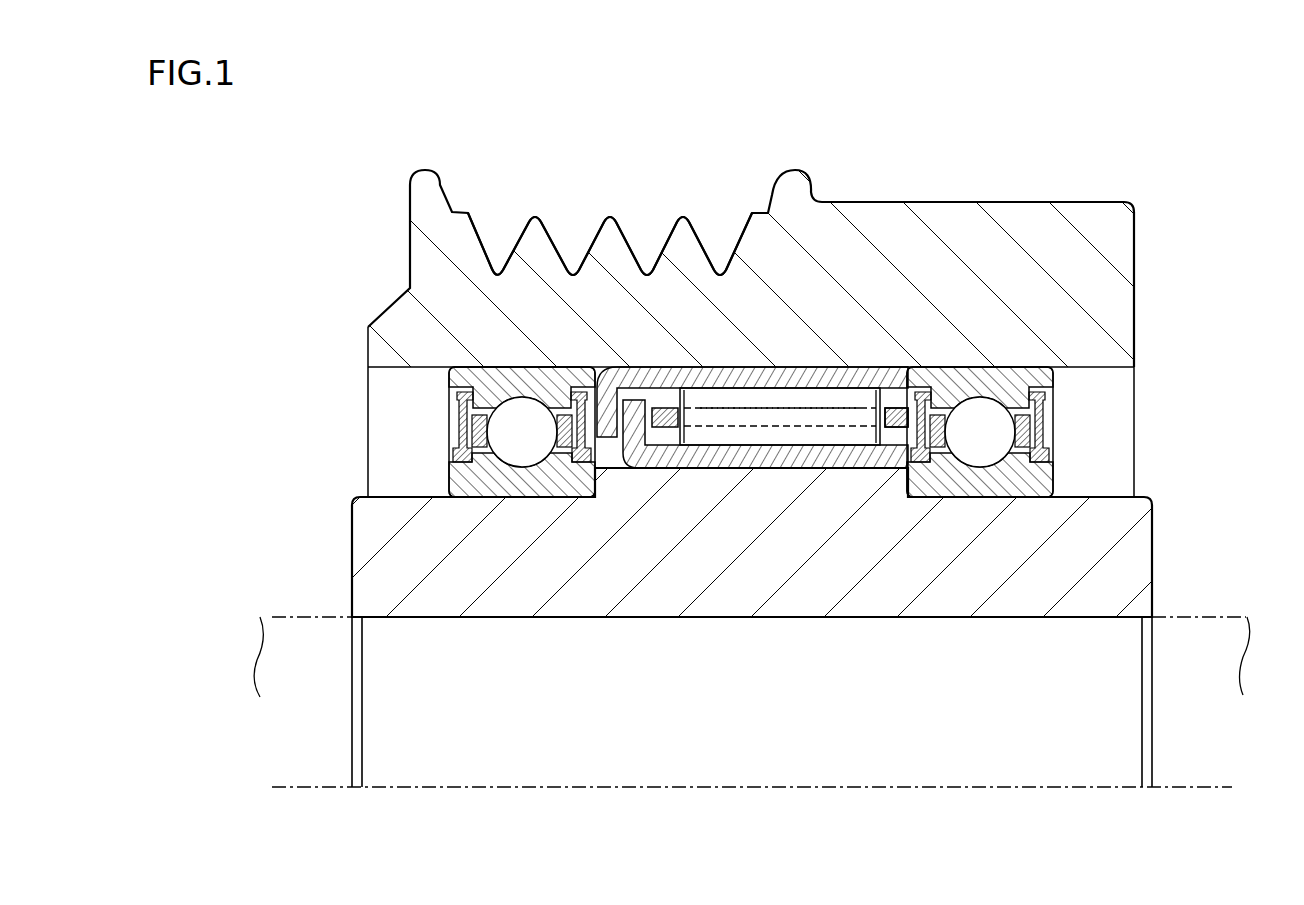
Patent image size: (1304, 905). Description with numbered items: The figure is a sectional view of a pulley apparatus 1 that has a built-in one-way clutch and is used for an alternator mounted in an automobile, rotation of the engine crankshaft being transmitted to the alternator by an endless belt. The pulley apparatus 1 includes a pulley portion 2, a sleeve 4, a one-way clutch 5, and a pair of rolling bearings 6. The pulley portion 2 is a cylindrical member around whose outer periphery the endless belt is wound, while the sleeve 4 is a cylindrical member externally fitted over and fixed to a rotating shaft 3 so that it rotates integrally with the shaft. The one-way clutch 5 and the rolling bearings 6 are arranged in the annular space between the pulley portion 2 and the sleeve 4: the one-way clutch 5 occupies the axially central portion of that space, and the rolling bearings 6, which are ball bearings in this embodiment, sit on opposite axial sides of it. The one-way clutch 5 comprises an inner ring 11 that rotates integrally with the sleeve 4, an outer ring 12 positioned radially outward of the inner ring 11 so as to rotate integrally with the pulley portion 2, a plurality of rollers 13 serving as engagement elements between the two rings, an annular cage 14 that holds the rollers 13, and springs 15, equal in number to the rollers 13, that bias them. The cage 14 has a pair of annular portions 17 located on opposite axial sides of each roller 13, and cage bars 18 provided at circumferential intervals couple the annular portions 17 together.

The pulley apparatus 1 is at (1086, 200).
The pulley portion 2 is at (522, 236).
The rotating shaft 3 is at (1222, 615).
The sleeve 4 is at (1102, 536).
The one-way clutch 5 is at (893, 365).
The rolling bearing 6 is at (440, 390).
The inner ring 11 is at (775, 455).
The outer ring 12 is at (767, 375).
The roller 13 is at (789, 294).
The cage 14 is at (898, 404).
The spring 15 is at (723, 420).
The annular portion 17 is at (660, 406).
The cage bar 18 is at (882, 364).